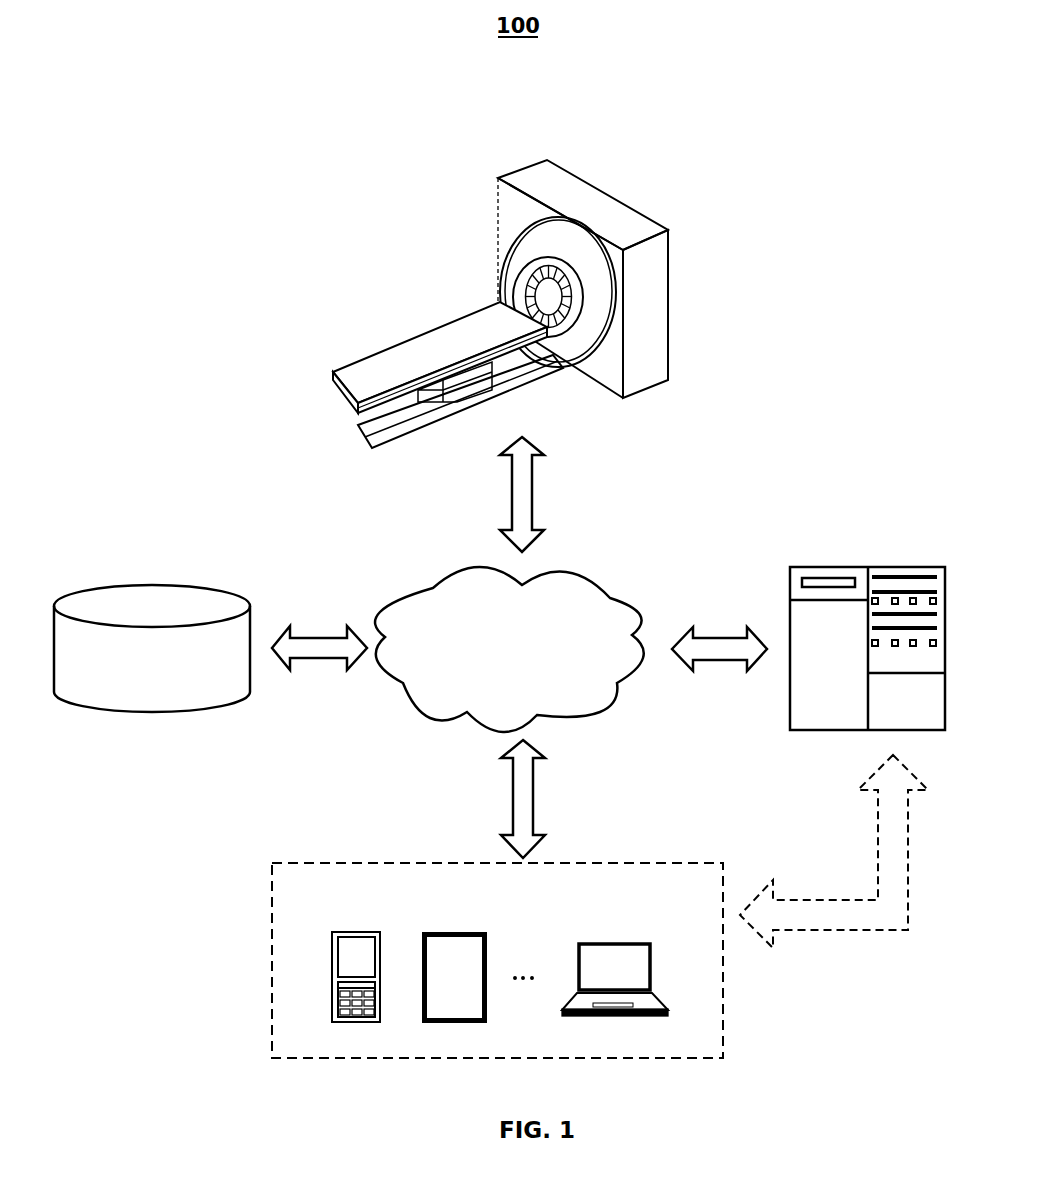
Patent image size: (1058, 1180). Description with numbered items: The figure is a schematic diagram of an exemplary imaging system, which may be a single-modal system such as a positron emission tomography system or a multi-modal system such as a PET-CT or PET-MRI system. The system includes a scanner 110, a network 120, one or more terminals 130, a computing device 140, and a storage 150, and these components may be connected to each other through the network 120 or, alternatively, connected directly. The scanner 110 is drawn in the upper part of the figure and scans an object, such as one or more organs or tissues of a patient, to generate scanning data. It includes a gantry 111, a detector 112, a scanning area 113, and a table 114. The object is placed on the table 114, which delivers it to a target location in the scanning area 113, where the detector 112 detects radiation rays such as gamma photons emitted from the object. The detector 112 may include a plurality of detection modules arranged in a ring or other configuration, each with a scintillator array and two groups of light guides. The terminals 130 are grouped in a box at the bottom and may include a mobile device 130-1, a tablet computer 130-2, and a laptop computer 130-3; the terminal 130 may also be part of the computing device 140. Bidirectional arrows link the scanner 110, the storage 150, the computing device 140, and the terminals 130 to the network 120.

The scanner 110 is at (728, 143).
The gantry 111 is at (590, 185).
The detector 112 is at (530, 280).
The scanning area 113 is at (552, 307).
The table 114 is at (392, 383).
The network 120 is at (542, 578).
The terminal 130 is at (557, 863).
The mobile device 130-1 is at (342, 930).
The tablet computer 130-2 is at (443, 930).
The laptop computer 130-3 is at (605, 932).
The computing device 140 is at (808, 565).
The storage 150 is at (115, 582).